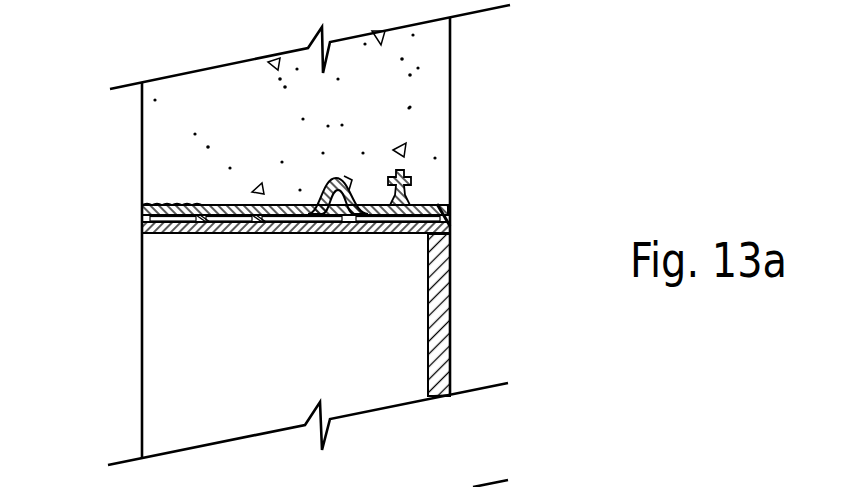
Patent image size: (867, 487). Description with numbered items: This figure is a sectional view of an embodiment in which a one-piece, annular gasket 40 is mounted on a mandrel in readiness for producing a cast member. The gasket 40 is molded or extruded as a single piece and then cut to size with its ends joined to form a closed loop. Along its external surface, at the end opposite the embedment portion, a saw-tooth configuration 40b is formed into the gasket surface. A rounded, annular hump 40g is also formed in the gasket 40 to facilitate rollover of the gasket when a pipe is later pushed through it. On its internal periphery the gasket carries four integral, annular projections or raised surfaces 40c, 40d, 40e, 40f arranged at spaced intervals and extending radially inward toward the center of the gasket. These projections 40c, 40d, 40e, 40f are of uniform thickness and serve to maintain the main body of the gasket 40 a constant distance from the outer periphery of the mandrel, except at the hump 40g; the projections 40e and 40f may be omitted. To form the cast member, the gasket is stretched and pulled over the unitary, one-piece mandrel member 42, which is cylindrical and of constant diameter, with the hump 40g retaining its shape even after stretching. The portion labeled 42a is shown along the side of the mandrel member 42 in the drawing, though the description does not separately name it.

The gasket 40 is at (498, 67).
The saw-tooth configuration 40b is at (166, 194).
The annular projection 40c is at (142, 217).
The annular projection 40d is at (213, 221).
The annular projection 40e is at (290, 222).
The annular projection 40f is at (450, 213).
The hump 40g is at (342, 165).
The mandrel member 42 is at (460, 245).
The form side wall 42a is at (450, 323).